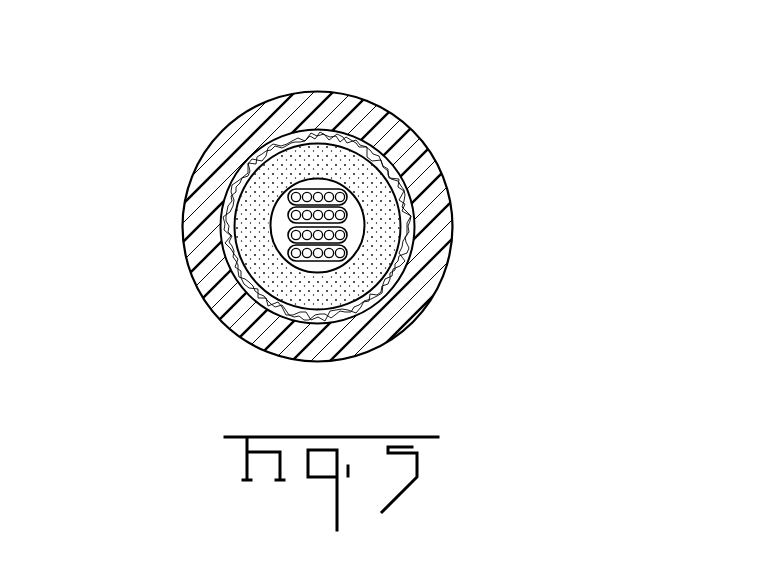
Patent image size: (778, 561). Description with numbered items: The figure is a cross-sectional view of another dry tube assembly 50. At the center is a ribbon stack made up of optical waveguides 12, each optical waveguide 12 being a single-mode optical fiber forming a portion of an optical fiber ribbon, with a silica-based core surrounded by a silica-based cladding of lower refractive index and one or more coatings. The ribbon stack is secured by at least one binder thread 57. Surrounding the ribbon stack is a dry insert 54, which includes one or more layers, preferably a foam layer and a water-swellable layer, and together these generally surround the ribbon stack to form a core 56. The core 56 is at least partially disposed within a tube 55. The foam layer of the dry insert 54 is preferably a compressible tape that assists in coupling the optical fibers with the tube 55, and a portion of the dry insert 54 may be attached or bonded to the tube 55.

The dry tube assembly 50 is at (187, 108).
The optical waveguide 12 is at (290, 214).
The dry insert 54 is at (392, 247).
The tube 55 is at (202, 203).
The core 56 is at (266, 272).
The binder thread 57 is at (312, 127).